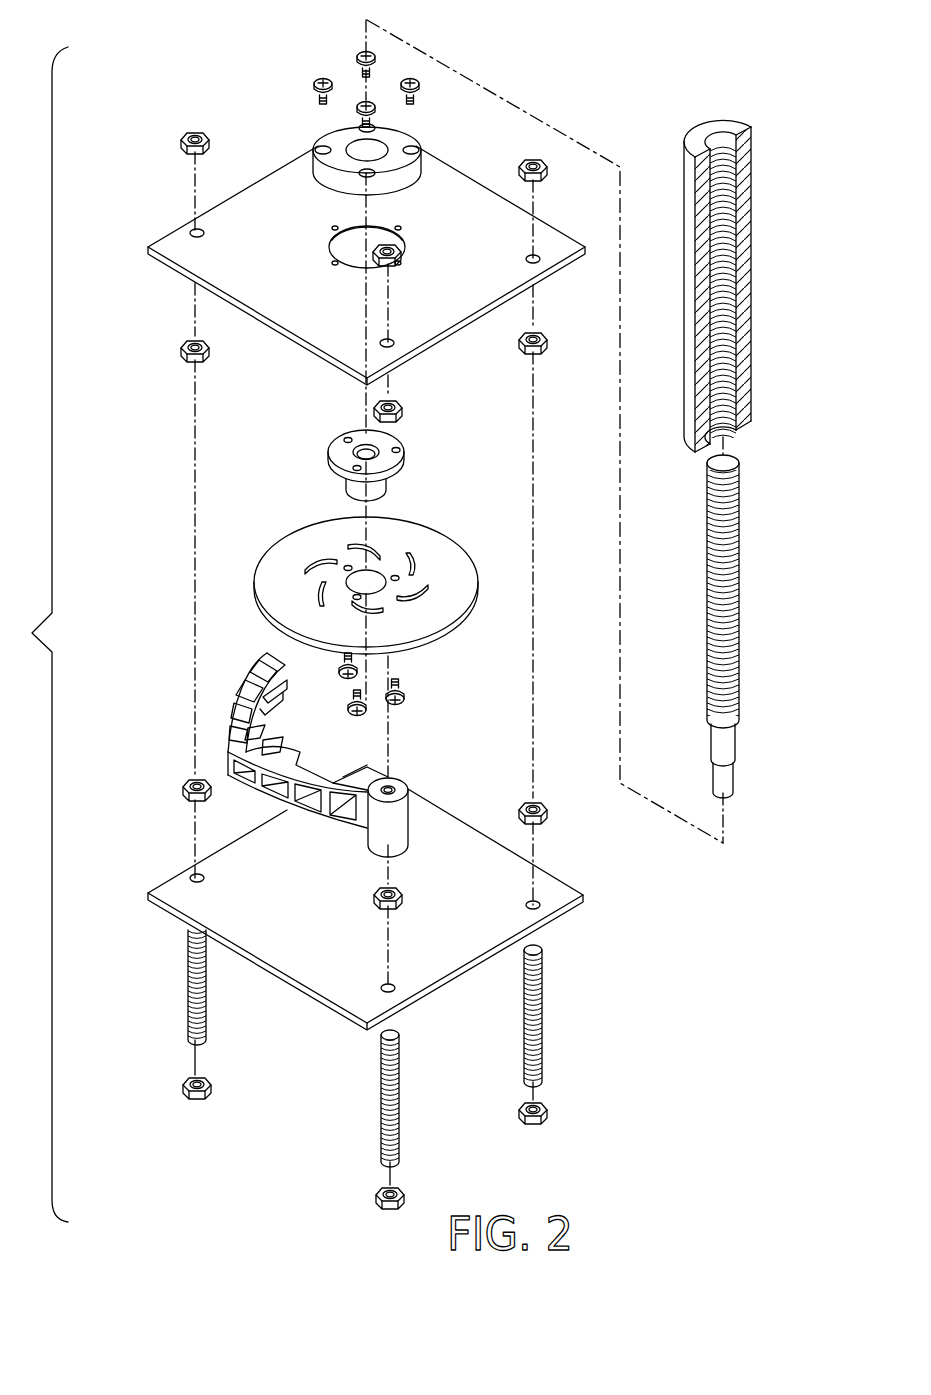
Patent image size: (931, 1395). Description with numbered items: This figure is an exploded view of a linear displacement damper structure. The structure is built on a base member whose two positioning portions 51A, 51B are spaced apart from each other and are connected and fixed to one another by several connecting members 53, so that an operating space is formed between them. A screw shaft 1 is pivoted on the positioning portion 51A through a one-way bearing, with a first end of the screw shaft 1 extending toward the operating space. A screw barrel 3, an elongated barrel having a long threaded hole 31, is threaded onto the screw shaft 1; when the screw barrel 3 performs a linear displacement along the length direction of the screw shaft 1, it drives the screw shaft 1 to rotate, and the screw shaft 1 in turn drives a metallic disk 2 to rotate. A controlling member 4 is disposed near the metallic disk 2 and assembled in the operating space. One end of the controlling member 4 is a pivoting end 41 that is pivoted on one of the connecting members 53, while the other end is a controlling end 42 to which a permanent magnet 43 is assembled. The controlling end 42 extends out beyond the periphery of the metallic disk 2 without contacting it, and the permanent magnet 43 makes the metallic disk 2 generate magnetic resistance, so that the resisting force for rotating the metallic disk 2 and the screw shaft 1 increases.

The screw shaft 1 is at (735, 537).
The metallic disk 2 is at (262, 578).
The screw barrel 3 is at (744, 286).
The long threaded hole 31 is at (724, 263).
The controlling member 4 is at (272, 751).
The pivoting end 41 is at (378, 838).
The controlling end 42 is at (245, 695).
The permanent magnet 43 is at (268, 660).
The positioning portion 51A is at (167, 248).
The positioning portion 51B is at (172, 887).
The connecting members 53 is at (192, 980).